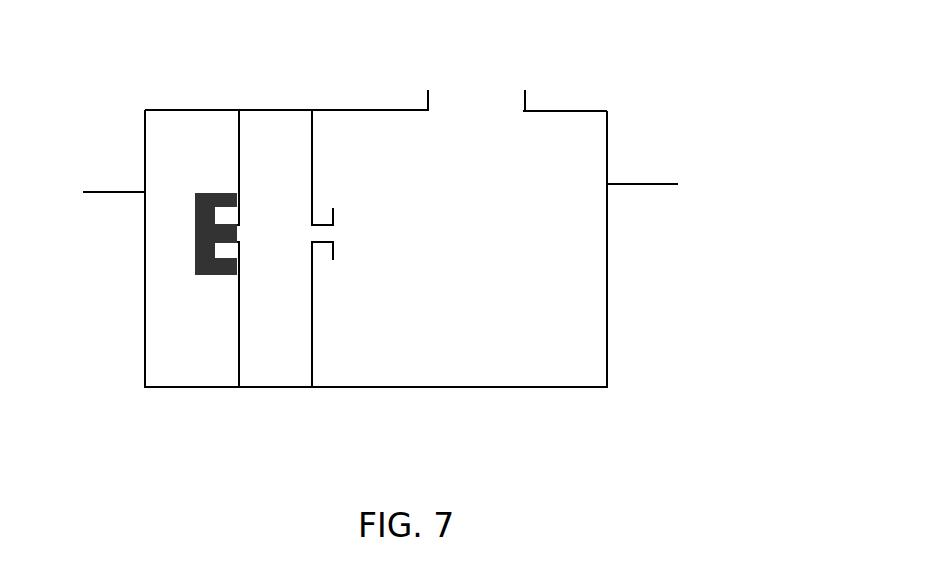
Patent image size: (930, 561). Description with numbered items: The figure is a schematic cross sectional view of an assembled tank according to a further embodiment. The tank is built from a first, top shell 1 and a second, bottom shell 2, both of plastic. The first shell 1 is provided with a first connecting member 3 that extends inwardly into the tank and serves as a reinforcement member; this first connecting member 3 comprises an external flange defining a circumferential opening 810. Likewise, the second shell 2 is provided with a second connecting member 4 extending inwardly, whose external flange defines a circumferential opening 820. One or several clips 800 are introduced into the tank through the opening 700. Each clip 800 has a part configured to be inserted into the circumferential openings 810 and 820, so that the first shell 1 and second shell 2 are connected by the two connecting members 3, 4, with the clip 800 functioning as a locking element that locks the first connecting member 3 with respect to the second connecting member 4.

The top shell 1 is at (610, 148).
The bottom shell 2 is at (609, 290).
The first connecting member 3 is at (238, 133).
The second connecting member 4 is at (236, 352).
The opening 700 is at (507, 108).
The clip 800 is at (208, 243).
The circumferential opening 810 is at (318, 209).
The circumferential opening 820 is at (318, 252).